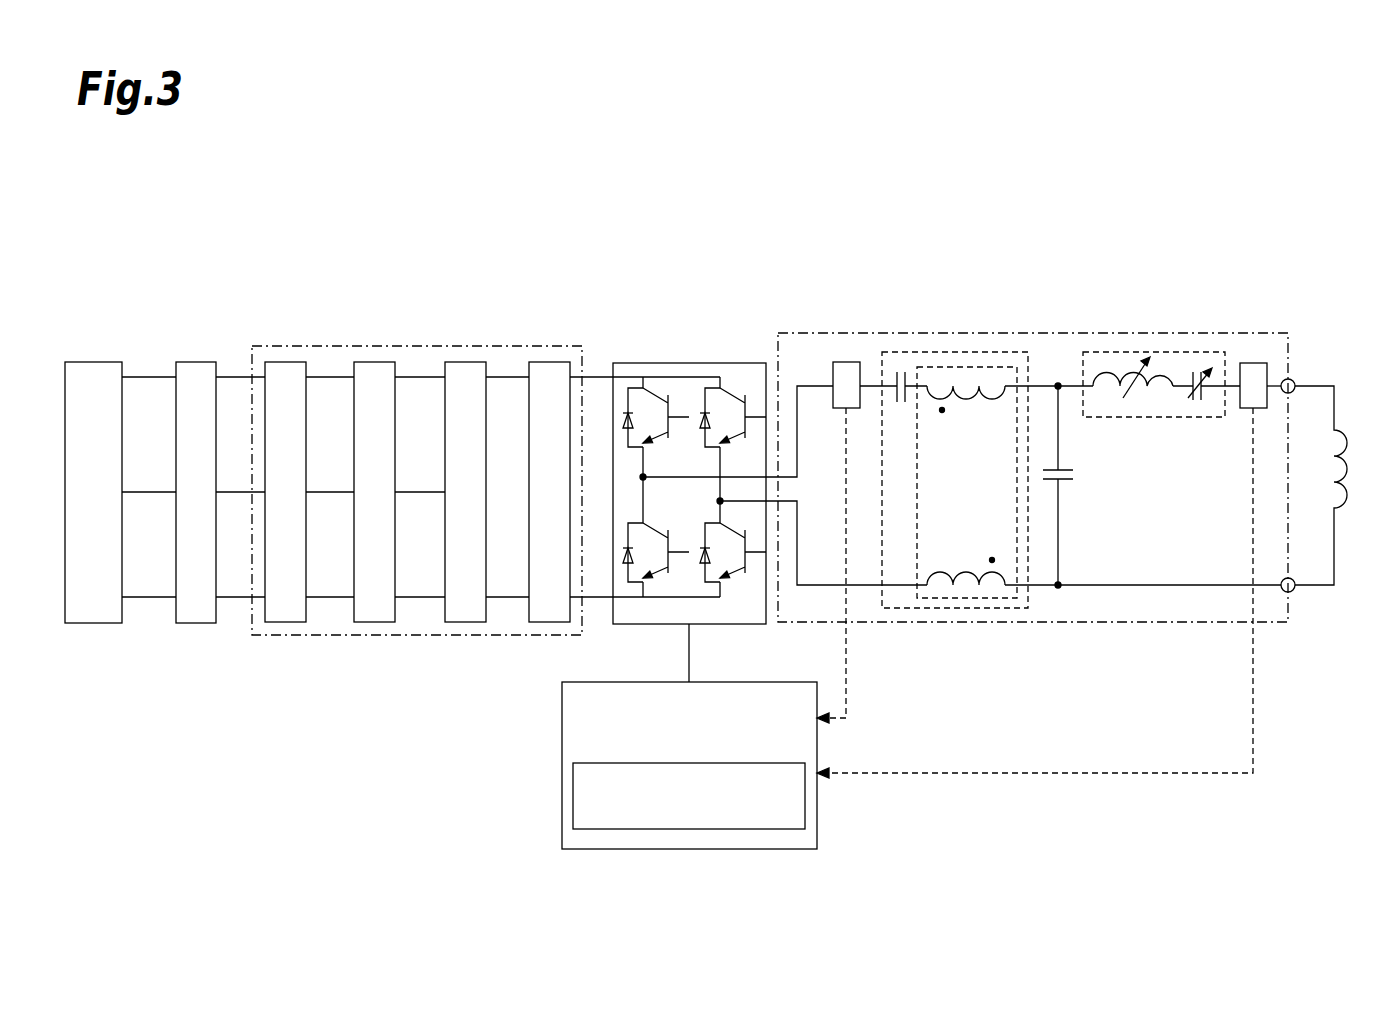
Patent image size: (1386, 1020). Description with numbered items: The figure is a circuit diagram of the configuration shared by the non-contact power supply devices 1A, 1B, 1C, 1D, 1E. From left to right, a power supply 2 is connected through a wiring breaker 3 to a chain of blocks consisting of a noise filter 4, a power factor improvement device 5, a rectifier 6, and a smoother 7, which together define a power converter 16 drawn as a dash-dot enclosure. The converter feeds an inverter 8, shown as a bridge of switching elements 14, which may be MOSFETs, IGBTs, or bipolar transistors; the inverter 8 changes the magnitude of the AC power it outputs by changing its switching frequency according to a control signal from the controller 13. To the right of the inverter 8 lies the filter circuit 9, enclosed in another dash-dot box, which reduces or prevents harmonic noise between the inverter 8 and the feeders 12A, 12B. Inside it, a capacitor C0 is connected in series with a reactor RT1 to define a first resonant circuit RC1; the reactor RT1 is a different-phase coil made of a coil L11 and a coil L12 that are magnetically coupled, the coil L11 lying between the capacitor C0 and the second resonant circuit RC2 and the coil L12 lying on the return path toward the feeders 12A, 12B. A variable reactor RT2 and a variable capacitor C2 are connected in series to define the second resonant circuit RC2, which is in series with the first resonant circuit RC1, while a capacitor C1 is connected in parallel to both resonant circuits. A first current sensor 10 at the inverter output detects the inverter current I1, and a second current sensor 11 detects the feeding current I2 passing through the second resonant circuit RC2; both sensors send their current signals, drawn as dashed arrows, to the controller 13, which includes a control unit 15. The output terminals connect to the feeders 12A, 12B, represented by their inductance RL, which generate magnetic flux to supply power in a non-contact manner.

The non-contact power supply device 1A is at (724, 503).
The non-contact power supply device 1B is at (724, 503).
The non-contact power supply device 1C is at (724, 503).
The non-contact power supply device 1D is at (724, 503).
The non-contact power supply device 1E is at (1318, 187).
The power supply 2 is at (85, 362).
The wiring breaker 3 is at (194, 362).
The noise filter 4 is at (280, 362).
The power factor improvement device 5 is at (371, 362).
The rectifier 6 is at (463, 362).
The smoother 7 is at (547, 362).
The inverter 8 is at (636, 363).
The switching element 14 is at (732, 391).
The power converter 16 is at (352, 637).
The filter circuit 9 is at (1098, 623).
The first current sensor 10 is at (845, 361).
The capacitor C0 is at (888, 371).
The first resonant circuit RC1 is at (948, 351).
The reactor RT1 is at (993, 366).
The coil L11 is at (967, 405).
The coil L12 is at (940, 568).
The capacitor C1 is at (1068, 480).
The second resonant circuit RC2 is at (1130, 351).
The reactor RT2 is at (1118, 400).
The capacitor C2 is at (1194, 371).
The second current sensor 11 is at (1253, 362).
The feeder 12A is at (1327, 443).
The feeder 12B is at (1332, 372).
The inductance RL is at (1355, 505).
The controller 13 is at (562, 708).
The control unit 15 is at (573, 788).
The current I1 is at (849, 565).
The current I2 is at (1035, 609).